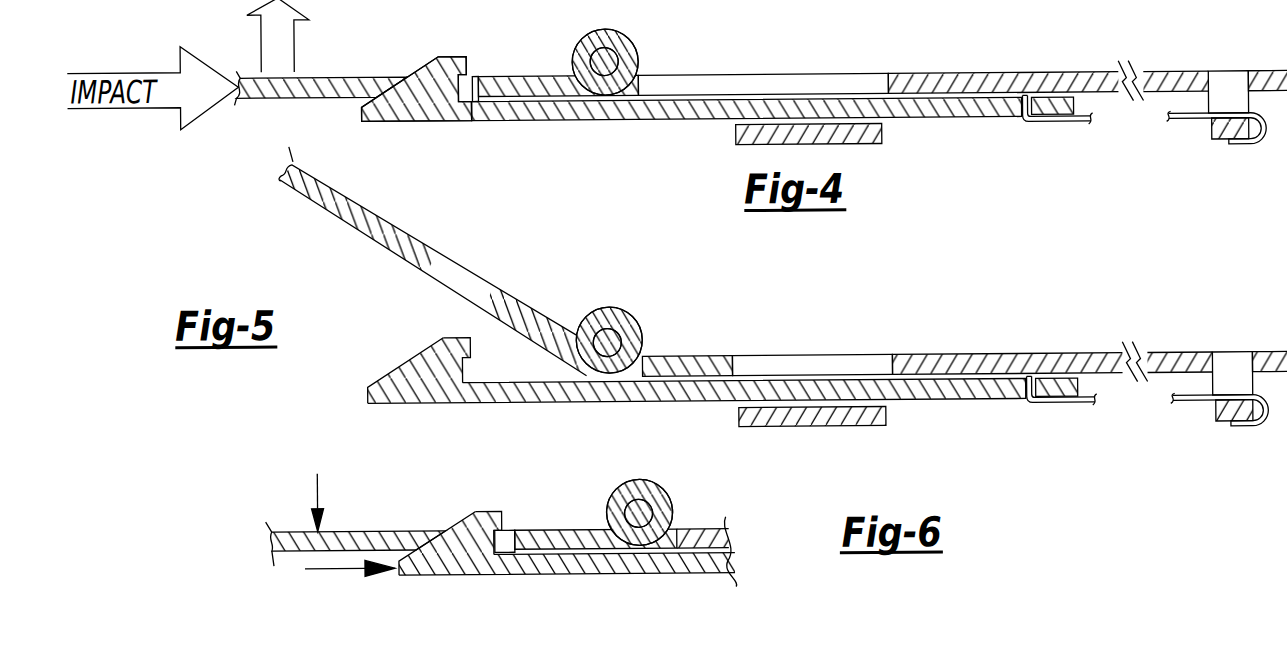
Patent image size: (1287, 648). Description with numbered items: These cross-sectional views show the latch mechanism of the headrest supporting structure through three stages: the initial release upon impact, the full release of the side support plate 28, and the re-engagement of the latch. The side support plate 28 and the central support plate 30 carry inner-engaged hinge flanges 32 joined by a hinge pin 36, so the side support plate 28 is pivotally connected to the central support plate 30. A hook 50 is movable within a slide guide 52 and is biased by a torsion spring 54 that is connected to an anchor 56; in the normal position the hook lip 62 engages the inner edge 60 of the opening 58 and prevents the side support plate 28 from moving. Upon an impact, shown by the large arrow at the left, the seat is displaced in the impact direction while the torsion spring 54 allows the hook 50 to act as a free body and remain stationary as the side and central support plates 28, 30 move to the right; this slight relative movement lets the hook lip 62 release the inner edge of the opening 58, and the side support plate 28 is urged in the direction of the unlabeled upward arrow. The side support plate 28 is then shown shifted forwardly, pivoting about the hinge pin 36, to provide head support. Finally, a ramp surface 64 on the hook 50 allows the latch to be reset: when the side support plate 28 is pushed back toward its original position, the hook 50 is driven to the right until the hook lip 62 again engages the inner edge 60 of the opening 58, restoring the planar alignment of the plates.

In FIG. 4, the side support plate 28 is at (352, 74).
In FIG. 5, the side support plate 28 is at (425, 236).
In FIG. 6, the side support plate 28 is at (290, 527).
In FIG. 4, the central support plate 30 is at (920, 73).
In FIG. 5, the central support plate 30 is at (930, 354).
In FIG. 6, the central support plate 30 is at (733, 540).
In FIG. 4, the hinge flanges 32 is at (603, 27).
In FIG. 5, the hinge flanges 32 is at (612, 306).
In FIG. 6, the hinge flanges 32 is at (641, 478).
In FIG. 4, the hinge pin 36 is at (619, 65).
In FIG. 5, the hinge pin 36 is at (620, 343).
In FIG. 6, the hinge pin 36 is at (652, 513).
In FIG. 4, the hook 50 is at (571, 119).
In FIG. 5, the hook 50 is at (656, 401).
In FIG. 6, the hook 50 is at (601, 573).
In FIG. 4, the slide guide 52 is at (838, 145).
In FIG. 5, the slide guide 52 is at (872, 427).
In FIG. 4, the torsion spring 54 is at (1185, 122).
In FIG. 5, the torsion spring 54 is at (1188, 404).
In FIG. 4, the anchor 56 is at (1226, 143).
In FIG. 5, the anchor 56 is at (1228, 425).
In FIG. 4, the opening 58 is at (480, 73).
In FIG. 5, the opening 58 is at (471, 264).
In FIG. 6, the opening 58 is at (437, 527).
In FIG. 5, the inner edge 60 is at (494, 287).
In FIG. 6, the inner edge 60 is at (504, 573).
In FIG. 4, the hook lip 62 is at (455, 55).
In FIG. 5, the hook lip 62 is at (473, 347).
In FIG. 6, the hook lip 62 is at (505, 508).
In FIG. 5, the ramp surface 64 is at (408, 357).
In FIG. 6, the ramp surface 64 is at (452, 505).